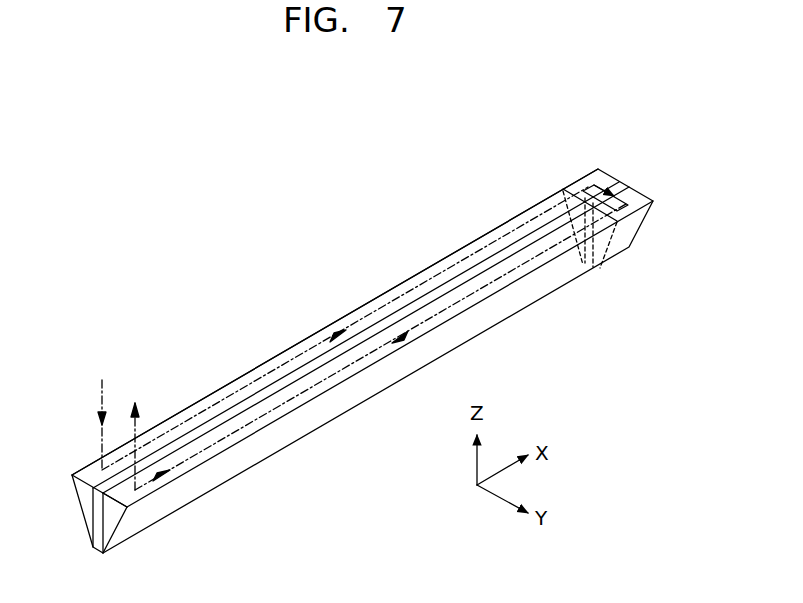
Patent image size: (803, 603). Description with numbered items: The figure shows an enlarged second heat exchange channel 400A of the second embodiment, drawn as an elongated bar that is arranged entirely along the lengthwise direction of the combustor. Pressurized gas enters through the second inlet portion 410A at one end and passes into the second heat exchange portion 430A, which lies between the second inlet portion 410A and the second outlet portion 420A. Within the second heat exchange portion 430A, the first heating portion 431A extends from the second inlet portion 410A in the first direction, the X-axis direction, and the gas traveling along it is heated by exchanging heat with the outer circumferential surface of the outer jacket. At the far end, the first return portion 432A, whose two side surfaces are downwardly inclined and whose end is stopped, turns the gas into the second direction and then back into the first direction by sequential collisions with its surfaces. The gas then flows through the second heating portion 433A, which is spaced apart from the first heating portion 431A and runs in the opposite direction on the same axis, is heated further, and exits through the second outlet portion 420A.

The second heat exchange channel 400A is at (143, 247).
The second inlet portion 410A is at (88, 472).
The second outlet portion 420A is at (130, 495).
The second heat exchange portion 430A is at (403, 268).
The first heating portion 431A is at (298, 348).
The first return portion 432A is at (597, 168).
The second heating portion 433A is at (377, 348).